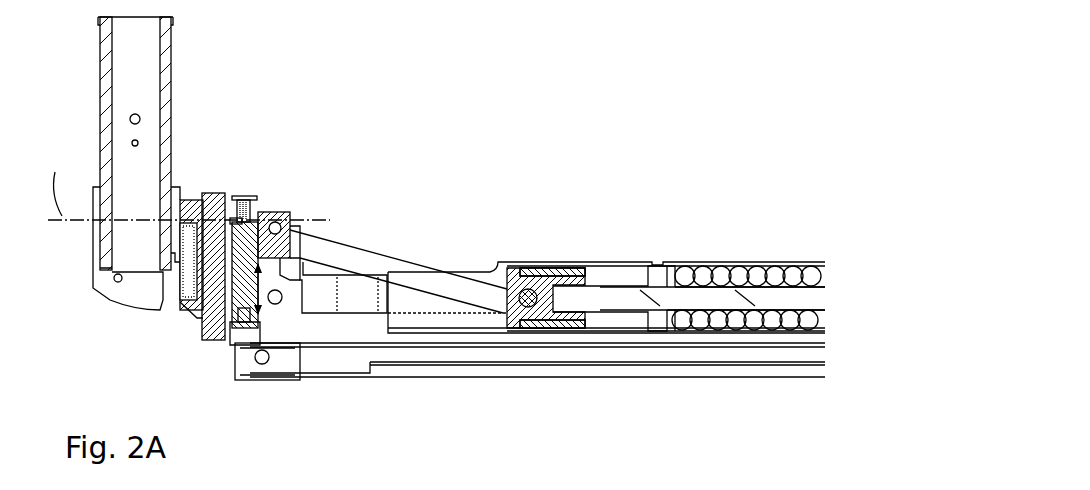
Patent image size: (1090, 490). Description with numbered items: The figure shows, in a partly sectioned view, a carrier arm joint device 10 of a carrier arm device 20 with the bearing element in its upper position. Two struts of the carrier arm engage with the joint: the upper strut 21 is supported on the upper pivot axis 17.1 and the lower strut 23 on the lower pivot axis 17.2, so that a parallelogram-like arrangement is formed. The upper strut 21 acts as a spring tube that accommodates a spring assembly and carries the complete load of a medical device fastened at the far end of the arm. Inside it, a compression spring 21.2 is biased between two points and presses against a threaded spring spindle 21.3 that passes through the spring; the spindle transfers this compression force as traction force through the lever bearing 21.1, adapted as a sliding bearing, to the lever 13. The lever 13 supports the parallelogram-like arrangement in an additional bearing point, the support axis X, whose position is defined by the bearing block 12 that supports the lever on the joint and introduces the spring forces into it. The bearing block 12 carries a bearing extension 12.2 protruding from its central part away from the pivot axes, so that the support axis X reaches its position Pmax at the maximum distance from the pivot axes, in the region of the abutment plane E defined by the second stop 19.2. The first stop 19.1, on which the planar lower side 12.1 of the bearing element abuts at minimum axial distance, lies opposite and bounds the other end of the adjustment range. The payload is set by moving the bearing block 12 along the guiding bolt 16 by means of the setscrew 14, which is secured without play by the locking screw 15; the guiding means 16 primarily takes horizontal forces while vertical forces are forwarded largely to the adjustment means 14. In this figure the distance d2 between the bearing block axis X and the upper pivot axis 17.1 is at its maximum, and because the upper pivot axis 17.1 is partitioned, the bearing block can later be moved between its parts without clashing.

The carrier arm joint device 10 is at (283, 261).
The bearing block 12 is at (308, 236).
The planar lower side 12.1 is at (300, 233).
The bearing extension 12.2 is at (282, 212).
The lever 13 is at (374, 256).
The adjustment means 14 is at (248, 190).
The locking screw 15 is at (235, 342).
The guiding means 16 is at (222, 193).
The upper pivot axis 17.1 is at (278, 304).
The lower pivot axis 17.2 is at (248, 377).
The first stop 19.1 is at (286, 270).
The second stop 19.2 is at (235, 222).
The carrier arm device 20 is at (580, 195).
The upper strut 21 is at (490, 262).
The lever bearing 21.1 is at (590, 215).
The spring 21.2 is at (745, 257).
The spring spindle 21.3 is at (610, 296).
The lower strut 23 is at (535, 353).
The abutment plane E is at (54, 182).
The support axis X is at (292, 213).
The position of maximum distance Pmax is at (267, 188).
The distance d2 is at (256, 286).